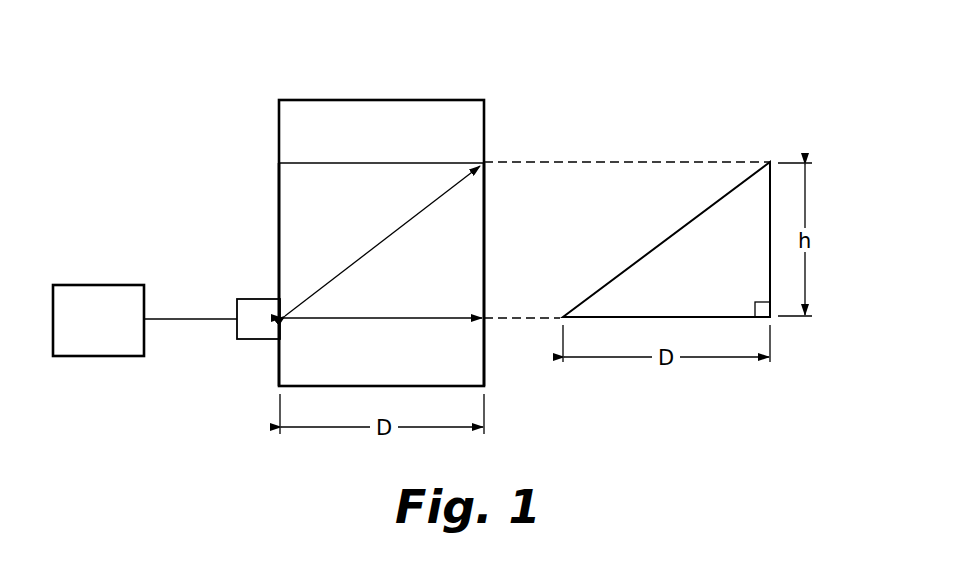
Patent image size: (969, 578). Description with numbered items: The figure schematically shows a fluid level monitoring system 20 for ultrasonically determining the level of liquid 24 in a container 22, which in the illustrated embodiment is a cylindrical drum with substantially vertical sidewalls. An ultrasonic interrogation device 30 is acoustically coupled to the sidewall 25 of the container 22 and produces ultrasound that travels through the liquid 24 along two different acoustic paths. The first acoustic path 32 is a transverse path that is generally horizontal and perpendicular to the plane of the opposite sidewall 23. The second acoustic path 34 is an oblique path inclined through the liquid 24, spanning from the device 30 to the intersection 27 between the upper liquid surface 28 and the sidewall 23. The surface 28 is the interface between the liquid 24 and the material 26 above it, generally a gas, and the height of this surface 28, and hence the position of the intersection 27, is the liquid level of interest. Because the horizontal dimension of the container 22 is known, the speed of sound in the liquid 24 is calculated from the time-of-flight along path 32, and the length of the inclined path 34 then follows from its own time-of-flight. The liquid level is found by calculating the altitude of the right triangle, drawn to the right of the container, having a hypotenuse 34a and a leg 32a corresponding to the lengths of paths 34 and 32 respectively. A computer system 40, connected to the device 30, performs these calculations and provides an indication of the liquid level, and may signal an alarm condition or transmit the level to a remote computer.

The fluid level monitoring system 20 is at (580, 46).
The container 22 is at (279, 126).
The sidewall 23 is at (486, 218).
The liquid 24 is at (435, 286).
The sidewall 25 is at (279, 222).
The material above the liquid 26 is at (365, 141).
The intersection 27 is at (485, 162).
The upper liquid surface 28 is at (410, 163).
The ultrasonic interrogation device 30 is at (247, 299).
The first acoustic path 32 is at (340, 318).
The leg 32a is at (706, 318).
The second acoustic path 34 is at (388, 238).
The hypotenuse 34a is at (620, 277).
The computer system 40 is at (95, 285).